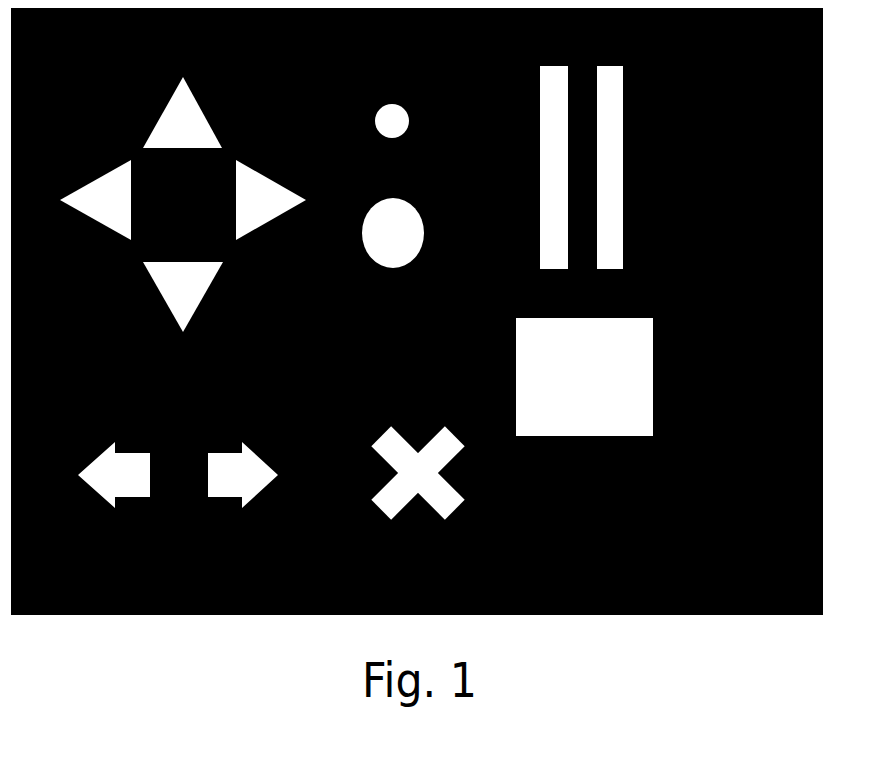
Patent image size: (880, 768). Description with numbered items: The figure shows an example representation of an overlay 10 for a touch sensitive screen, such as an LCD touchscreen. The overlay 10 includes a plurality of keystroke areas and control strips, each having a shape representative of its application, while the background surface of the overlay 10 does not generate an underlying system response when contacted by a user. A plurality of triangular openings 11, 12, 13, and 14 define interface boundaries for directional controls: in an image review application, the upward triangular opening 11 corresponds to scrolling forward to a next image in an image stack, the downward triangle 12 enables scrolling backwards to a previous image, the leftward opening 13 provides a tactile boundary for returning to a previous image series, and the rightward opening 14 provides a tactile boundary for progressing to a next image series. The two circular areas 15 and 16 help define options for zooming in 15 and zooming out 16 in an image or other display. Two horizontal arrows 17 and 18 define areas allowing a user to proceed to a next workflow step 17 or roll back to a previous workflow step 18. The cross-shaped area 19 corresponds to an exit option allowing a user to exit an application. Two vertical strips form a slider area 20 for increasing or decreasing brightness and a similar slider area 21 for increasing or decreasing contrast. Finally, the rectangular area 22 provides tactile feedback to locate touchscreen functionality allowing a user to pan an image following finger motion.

The overlay 10 is at (417, 311).
The triangular opening 11 is at (182, 112).
The triangle 12 is at (183, 297).
The opening 13 is at (95, 200).
The opening 14 is at (271, 200).
The zoom in area 15 is at (393, 233).
The zoom out area 16 is at (392, 121).
The arrow 17 is at (114, 475).
The arrow 18 is at (243, 475).
The exit area 19 is at (417, 472).
The slider area 20 is at (554, 167).
The slider area 21 is at (610, 167).
The pan area 22 is at (584, 377).